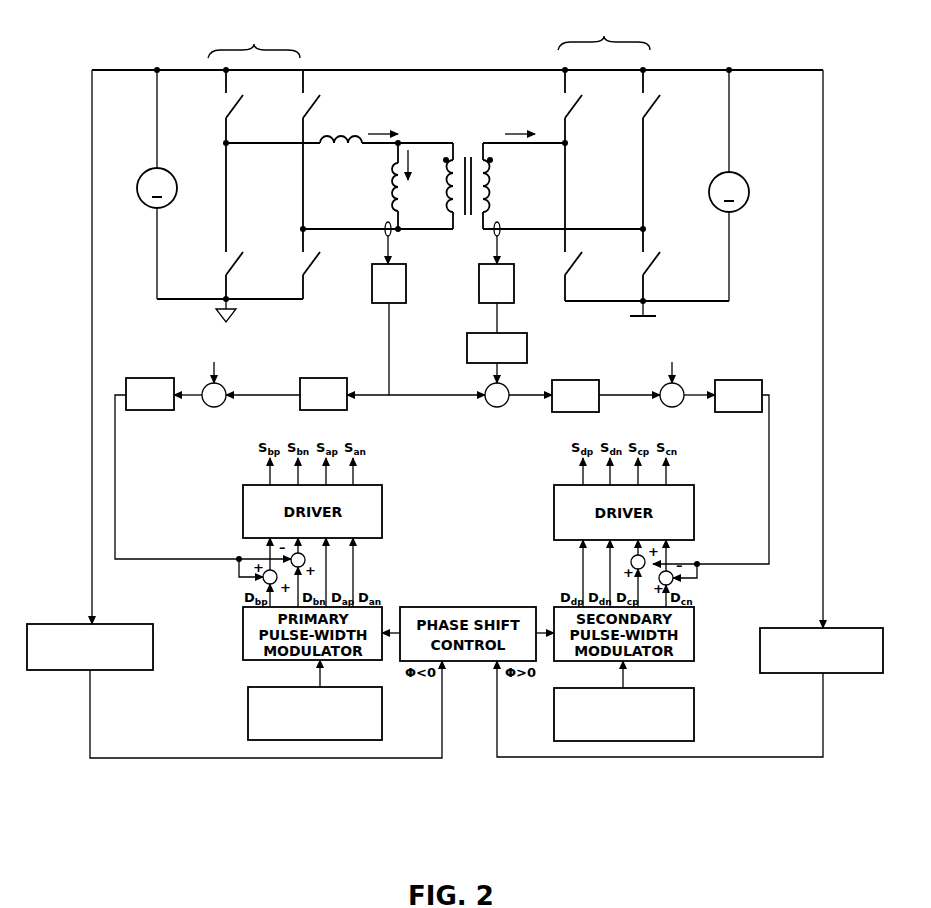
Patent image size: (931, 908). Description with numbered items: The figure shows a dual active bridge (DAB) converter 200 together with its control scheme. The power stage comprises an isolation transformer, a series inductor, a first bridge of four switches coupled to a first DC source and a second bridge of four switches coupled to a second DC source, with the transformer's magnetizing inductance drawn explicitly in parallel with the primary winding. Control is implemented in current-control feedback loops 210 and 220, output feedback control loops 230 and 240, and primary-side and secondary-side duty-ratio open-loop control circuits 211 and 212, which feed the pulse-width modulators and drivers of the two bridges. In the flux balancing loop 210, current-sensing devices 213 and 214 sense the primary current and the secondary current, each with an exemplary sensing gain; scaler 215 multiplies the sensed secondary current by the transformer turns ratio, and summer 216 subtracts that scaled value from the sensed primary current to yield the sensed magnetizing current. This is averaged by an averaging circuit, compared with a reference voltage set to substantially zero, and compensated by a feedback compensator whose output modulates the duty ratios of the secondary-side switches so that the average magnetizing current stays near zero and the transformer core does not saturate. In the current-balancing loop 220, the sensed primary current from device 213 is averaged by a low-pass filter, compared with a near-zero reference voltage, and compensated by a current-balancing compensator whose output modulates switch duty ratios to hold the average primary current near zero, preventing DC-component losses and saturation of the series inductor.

The DAB converter 200 is at (443, 78).
The current-control feedback loop 210 is at (533, 432).
The primary-side duty-ratio open-loop control circuit 211 is at (248, 716).
The secondary-side duty-ratio open-loop control circuit 212 is at (700, 716).
The current-sensing device 213 is at (418, 268).
The current-sensing device 214 is at (514, 281).
The scaler 215 is at (528, 344).
The summer 216 is at (491, 408).
The current-control feedback loop 220 is at (380, 411).
The output feedback control loop 230 is at (90, 478).
The output feedback control loop 240 is at (825, 482).